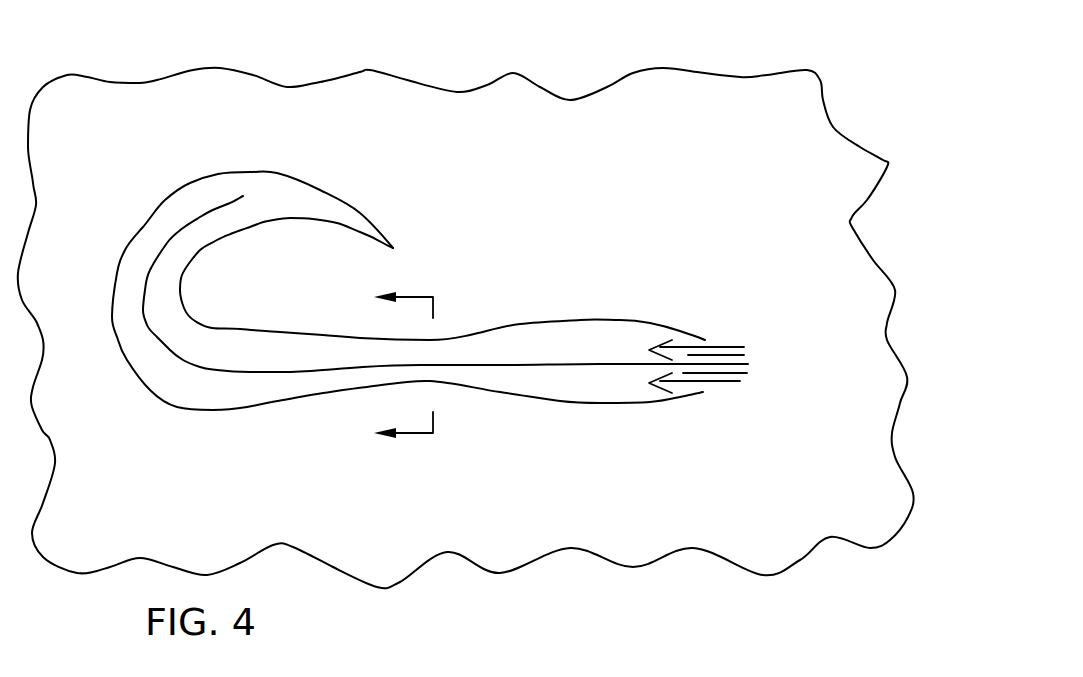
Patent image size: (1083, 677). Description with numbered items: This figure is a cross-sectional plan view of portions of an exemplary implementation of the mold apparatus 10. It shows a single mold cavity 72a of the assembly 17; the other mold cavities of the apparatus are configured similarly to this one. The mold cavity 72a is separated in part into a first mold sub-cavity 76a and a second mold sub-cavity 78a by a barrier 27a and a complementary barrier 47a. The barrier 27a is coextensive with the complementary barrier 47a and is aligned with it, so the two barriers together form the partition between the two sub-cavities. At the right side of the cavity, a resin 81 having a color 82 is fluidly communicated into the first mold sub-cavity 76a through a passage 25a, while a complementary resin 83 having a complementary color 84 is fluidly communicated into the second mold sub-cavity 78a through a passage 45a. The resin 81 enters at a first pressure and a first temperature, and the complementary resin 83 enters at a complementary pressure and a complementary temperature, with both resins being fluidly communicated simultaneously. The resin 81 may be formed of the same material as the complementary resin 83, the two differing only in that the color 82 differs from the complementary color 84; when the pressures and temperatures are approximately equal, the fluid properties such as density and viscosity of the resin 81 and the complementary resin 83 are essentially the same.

The fluid flow control assembly 10 is at (848, 60).
The assembly 17 is at (233, 104).
The passage 25a is at (743, 358).
The passage 45a is at (743, 373).
The barrier 27a is at (273, 370).
The complementary barrier 47a is at (288, 370).
The mold cavity 72a is at (217, 400).
The first mold sub-cavity 76a is at (207, 335).
The second mold sub-cavity 78a is at (155, 365).
The resin 81 is at (713, 347).
The color 82 is at (728, 347).
The complementary resin 83 is at (730, 390).
The complementary color 84 is at (717, 388).